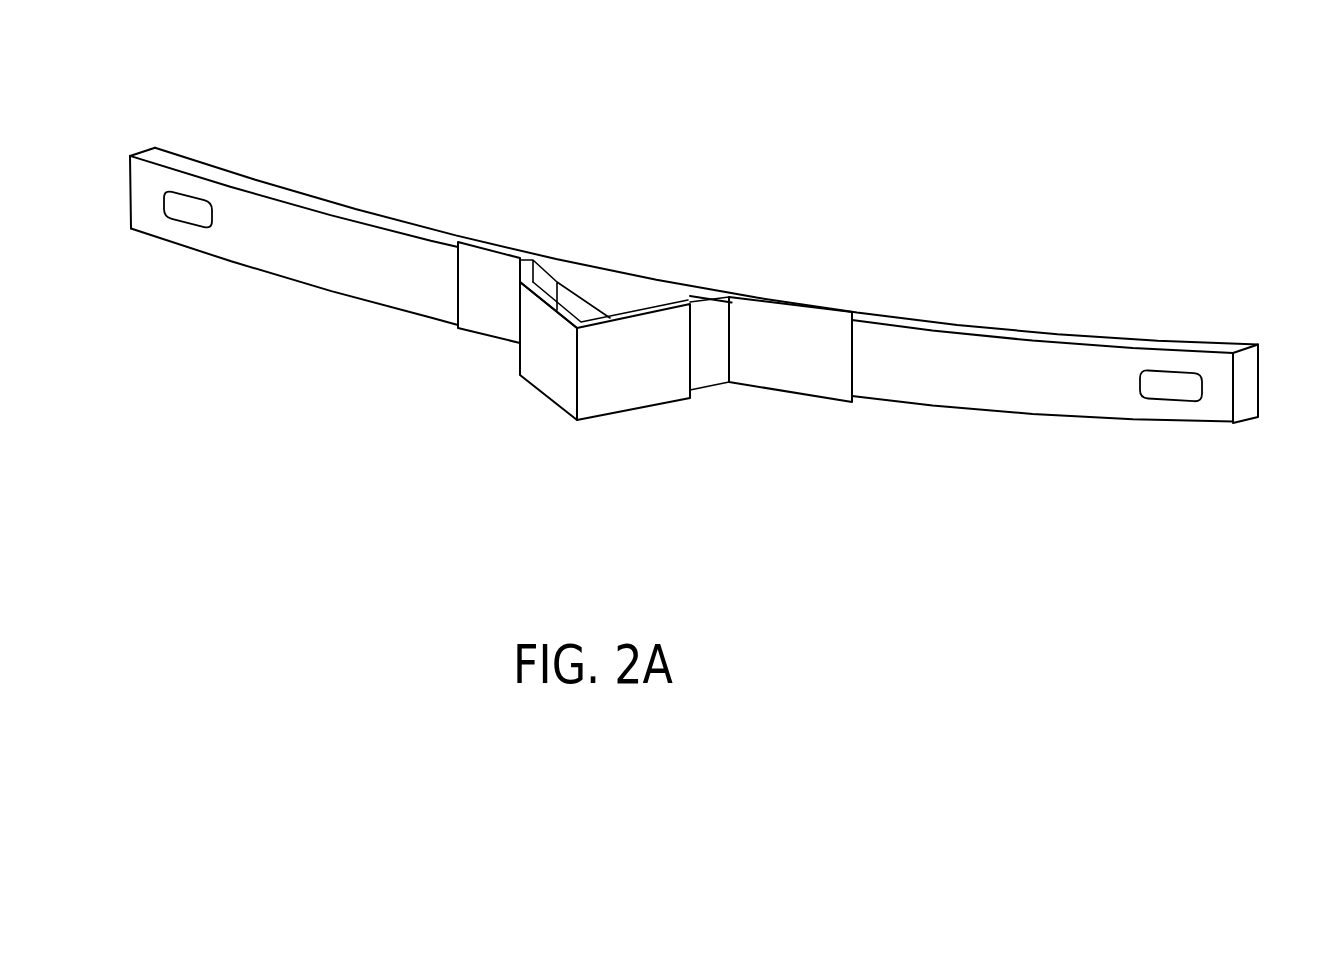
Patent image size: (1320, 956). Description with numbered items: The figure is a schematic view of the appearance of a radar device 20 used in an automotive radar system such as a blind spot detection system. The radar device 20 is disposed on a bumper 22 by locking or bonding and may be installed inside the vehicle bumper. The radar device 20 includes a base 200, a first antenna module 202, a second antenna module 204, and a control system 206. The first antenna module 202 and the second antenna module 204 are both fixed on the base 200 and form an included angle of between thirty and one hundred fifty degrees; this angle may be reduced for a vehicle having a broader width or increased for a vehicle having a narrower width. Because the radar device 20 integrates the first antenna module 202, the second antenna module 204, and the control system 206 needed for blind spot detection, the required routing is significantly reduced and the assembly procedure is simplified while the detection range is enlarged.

The radar device 20 is at (1068, 123).
The bumper 22 is at (1063, 352).
The base 200 is at (822, 318).
The first antenna module 202 is at (652, 327).
The second antenna module 204 is at (525, 312).
The control system 206 is at (585, 288).